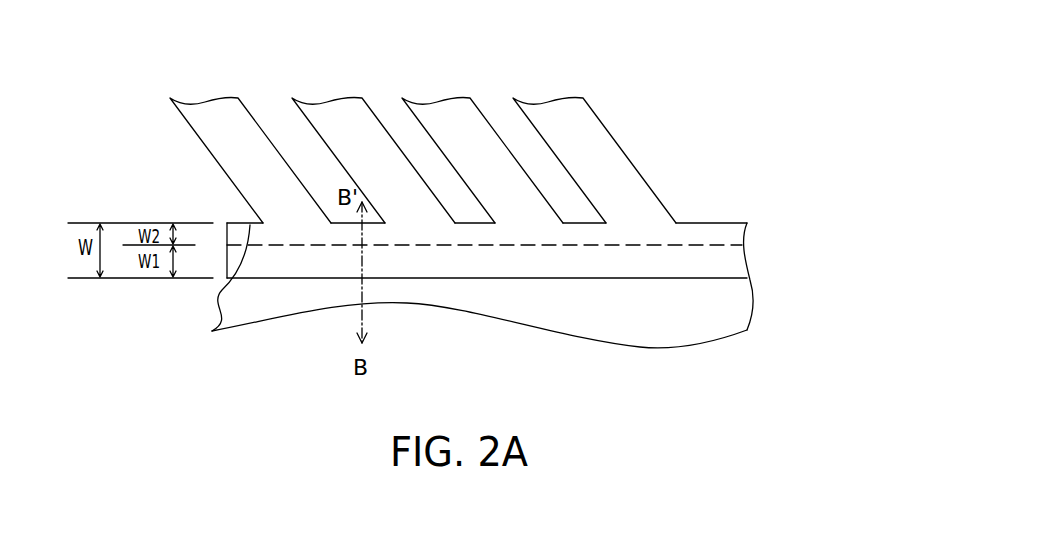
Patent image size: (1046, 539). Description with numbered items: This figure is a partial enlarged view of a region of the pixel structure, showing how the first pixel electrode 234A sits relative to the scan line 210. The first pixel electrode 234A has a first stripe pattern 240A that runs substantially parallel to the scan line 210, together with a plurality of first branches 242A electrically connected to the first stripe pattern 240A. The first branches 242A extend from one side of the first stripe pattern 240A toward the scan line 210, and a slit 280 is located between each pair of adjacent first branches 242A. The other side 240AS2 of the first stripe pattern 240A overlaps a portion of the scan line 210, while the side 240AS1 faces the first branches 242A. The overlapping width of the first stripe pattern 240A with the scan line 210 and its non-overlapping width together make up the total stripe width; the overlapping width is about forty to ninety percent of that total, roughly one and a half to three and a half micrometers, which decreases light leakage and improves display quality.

The scan line 210 is at (742, 300).
The first stripe pattern 240A is at (236, 276).
The first branches 242A is at (205, 137).
The side of first stripe pattern 240AS1 is at (713, 223).
The other side of first stripe pattern 240AS2 is at (527, 280).
The first pixel electrode 234A is at (657, 146).
The slit 280 is at (387, 117).